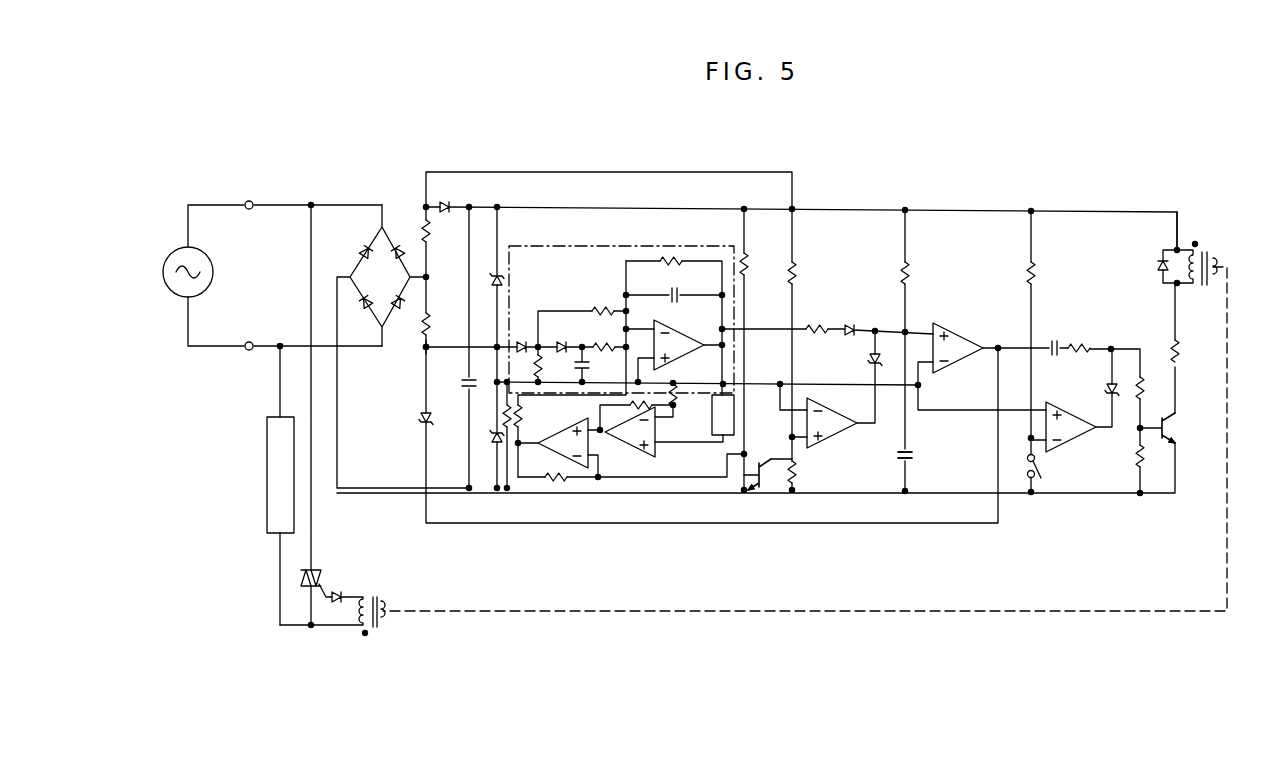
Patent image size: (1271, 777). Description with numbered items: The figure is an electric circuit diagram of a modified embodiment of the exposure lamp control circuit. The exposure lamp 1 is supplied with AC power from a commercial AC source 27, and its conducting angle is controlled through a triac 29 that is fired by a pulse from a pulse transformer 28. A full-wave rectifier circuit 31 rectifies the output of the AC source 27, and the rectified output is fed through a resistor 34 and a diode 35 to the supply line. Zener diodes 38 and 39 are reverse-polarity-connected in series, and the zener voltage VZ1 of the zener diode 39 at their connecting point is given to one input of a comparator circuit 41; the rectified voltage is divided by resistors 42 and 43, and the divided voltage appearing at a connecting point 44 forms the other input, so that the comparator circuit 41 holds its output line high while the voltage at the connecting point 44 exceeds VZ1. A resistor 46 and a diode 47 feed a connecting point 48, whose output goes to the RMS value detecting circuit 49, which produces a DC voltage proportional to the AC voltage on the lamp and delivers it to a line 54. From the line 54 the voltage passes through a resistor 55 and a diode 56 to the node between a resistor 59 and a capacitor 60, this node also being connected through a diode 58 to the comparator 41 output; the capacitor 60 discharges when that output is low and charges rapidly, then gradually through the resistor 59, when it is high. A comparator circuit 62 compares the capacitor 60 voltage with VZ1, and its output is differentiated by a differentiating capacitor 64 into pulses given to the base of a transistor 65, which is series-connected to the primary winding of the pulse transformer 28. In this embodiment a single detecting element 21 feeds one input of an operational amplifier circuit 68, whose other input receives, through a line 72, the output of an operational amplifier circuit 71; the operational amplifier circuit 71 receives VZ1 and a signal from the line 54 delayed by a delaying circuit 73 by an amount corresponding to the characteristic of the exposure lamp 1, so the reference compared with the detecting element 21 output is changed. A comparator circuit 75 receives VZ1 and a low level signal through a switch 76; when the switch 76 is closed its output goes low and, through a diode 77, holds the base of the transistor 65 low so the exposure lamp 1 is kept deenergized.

The exposure lamp 1 is at (267, 505).
The detecting element 21 is at (766, 482).
The commercial AC source 27 is at (214, 273).
The pulse transformer 28 is at (1212, 260).
The triac 29 is at (320, 580).
The full-wave rectifier circuit 31 is at (404, 236).
The resistor 34 is at (429, 242).
The diode 35 is at (447, 203).
The zener diode 38 is at (498, 270).
The zener diode 39 is at (490, 440).
The comparator circuit 41 is at (838, 442).
The resistor 42 is at (796, 268).
The resistor 43 is at (797, 467).
The connecting point 44 is at (784, 452).
The resistor 46 is at (429, 321).
The diode 47 is at (422, 418).
The connecting point 48 is at (424, 348).
The RMS value detecting circuit 49 is at (584, 256).
The line 54 is at (728, 328).
The resistor 55 is at (820, 330).
The diode 56 is at (854, 328).
The diode 58 is at (869, 360).
The resistor 59 is at (907, 272).
The capacitor 60 is at (907, 456).
The comparator circuit 62 is at (950, 346).
The differentiating capacitor 64 is at (1058, 346).
The transistor 65 is at (1176, 432).
The operational amplifier circuit 68 is at (572, 448).
The operational amplifier circuit 71 is at (638, 448).
The line 72 is at (598, 433).
The delaying circuit 73 is at (718, 412).
The comparator circuit 75 is at (1068, 440).
The switch 76 is at (1036, 472).
The diode 77 is at (1108, 392).